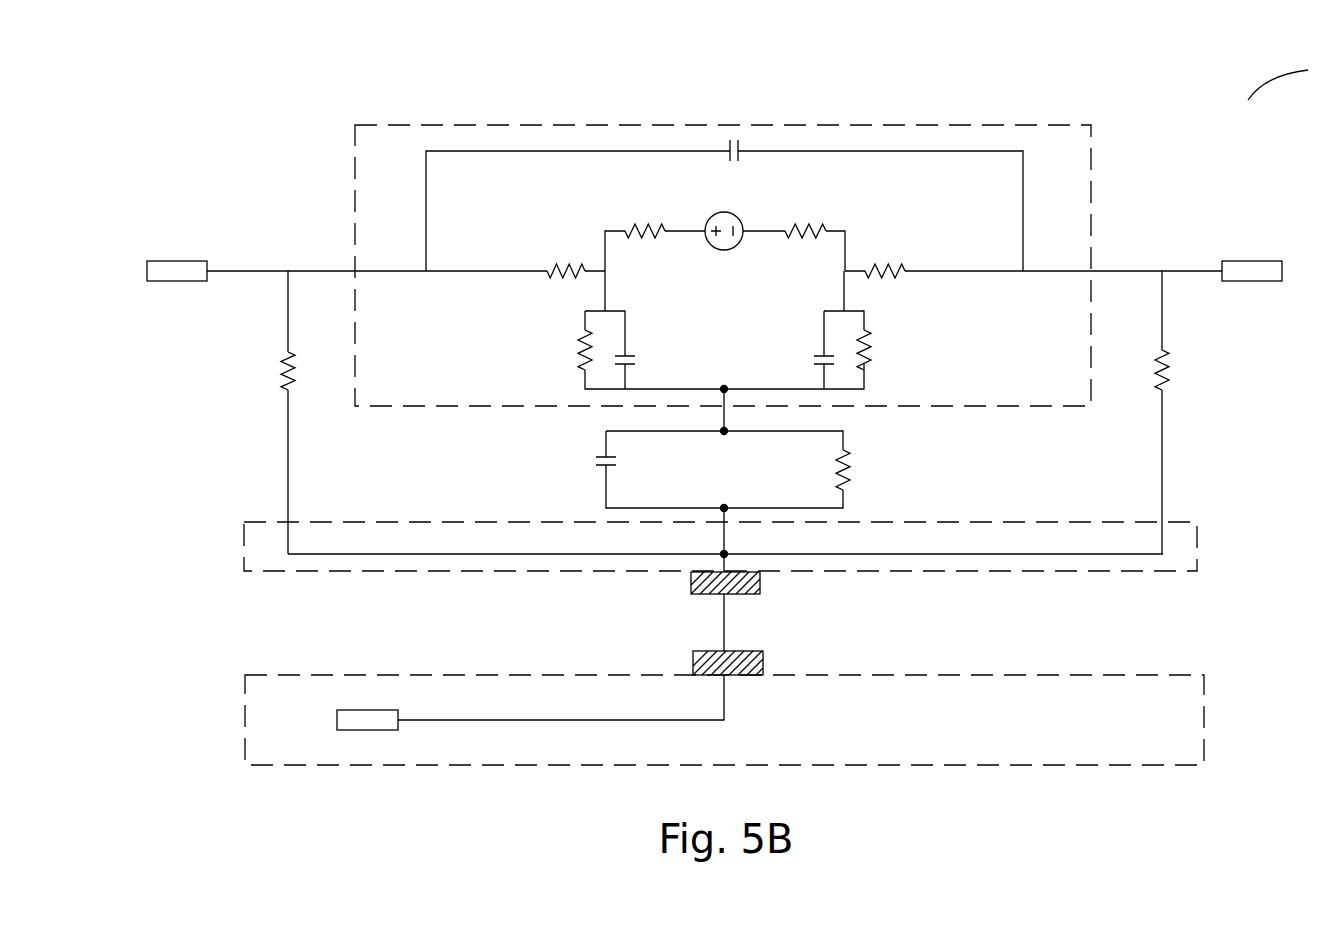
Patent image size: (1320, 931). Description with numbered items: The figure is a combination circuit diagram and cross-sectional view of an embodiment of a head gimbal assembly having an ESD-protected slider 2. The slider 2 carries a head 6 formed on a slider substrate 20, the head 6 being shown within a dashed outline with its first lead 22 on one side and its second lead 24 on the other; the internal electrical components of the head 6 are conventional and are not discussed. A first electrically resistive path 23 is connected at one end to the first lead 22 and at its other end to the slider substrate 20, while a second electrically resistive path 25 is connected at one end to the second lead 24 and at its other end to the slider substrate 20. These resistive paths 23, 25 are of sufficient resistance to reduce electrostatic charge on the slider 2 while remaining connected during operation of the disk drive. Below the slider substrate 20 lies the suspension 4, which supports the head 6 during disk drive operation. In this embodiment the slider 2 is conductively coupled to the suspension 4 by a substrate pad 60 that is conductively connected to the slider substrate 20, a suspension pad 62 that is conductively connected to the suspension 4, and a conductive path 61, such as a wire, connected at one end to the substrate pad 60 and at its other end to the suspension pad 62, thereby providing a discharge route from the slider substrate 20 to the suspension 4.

The slider 2 is at (232, 103).
The suspension 4 is at (232, 722).
The head 6 is at (727, 125).
The slider substrate 20 is at (232, 549).
The first lead 22 is at (1243, 261).
The first electrically resistive path 23 is at (1180, 366).
The second lead 24 is at (186, 260).
The second electrically resistive path 25 is at (270, 368).
The substrate pad 60 is at (760, 594).
The conductive path 61 is at (727, 625).
The suspension pad 62 is at (763, 660).